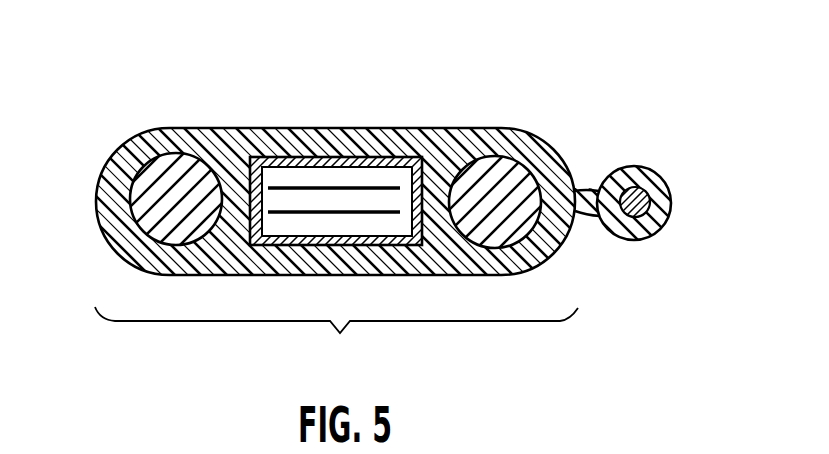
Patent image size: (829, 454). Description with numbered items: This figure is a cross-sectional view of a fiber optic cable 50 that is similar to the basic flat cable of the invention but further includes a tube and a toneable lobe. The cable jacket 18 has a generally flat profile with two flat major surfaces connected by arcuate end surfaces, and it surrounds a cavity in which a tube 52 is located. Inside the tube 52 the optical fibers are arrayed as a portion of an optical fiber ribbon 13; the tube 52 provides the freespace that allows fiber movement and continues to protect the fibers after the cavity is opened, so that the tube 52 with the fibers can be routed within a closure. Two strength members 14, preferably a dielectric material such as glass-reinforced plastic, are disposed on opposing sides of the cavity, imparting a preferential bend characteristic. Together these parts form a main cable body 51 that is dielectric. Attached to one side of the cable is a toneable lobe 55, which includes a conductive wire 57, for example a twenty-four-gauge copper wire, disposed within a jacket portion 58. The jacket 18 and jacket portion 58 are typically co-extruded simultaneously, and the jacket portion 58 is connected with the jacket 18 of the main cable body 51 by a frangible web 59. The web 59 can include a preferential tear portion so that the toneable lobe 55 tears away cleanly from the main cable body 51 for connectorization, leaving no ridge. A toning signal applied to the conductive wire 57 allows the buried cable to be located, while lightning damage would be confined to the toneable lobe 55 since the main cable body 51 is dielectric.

The fiber optic cable 50 is at (162, 84).
The cable jacket 18 is at (137, 147).
The strength member 14 is at (152, 227).
The optical fiber ribbon 13 is at (335, 212).
The tube 52 is at (385, 160).
The main cable body 51 is at (336, 340).
The frangible web 59 is at (597, 190).
The toneable lobe 55 is at (636, 180).
The conductive wire 57 is at (648, 193).
The jacket portion 58 is at (655, 232).